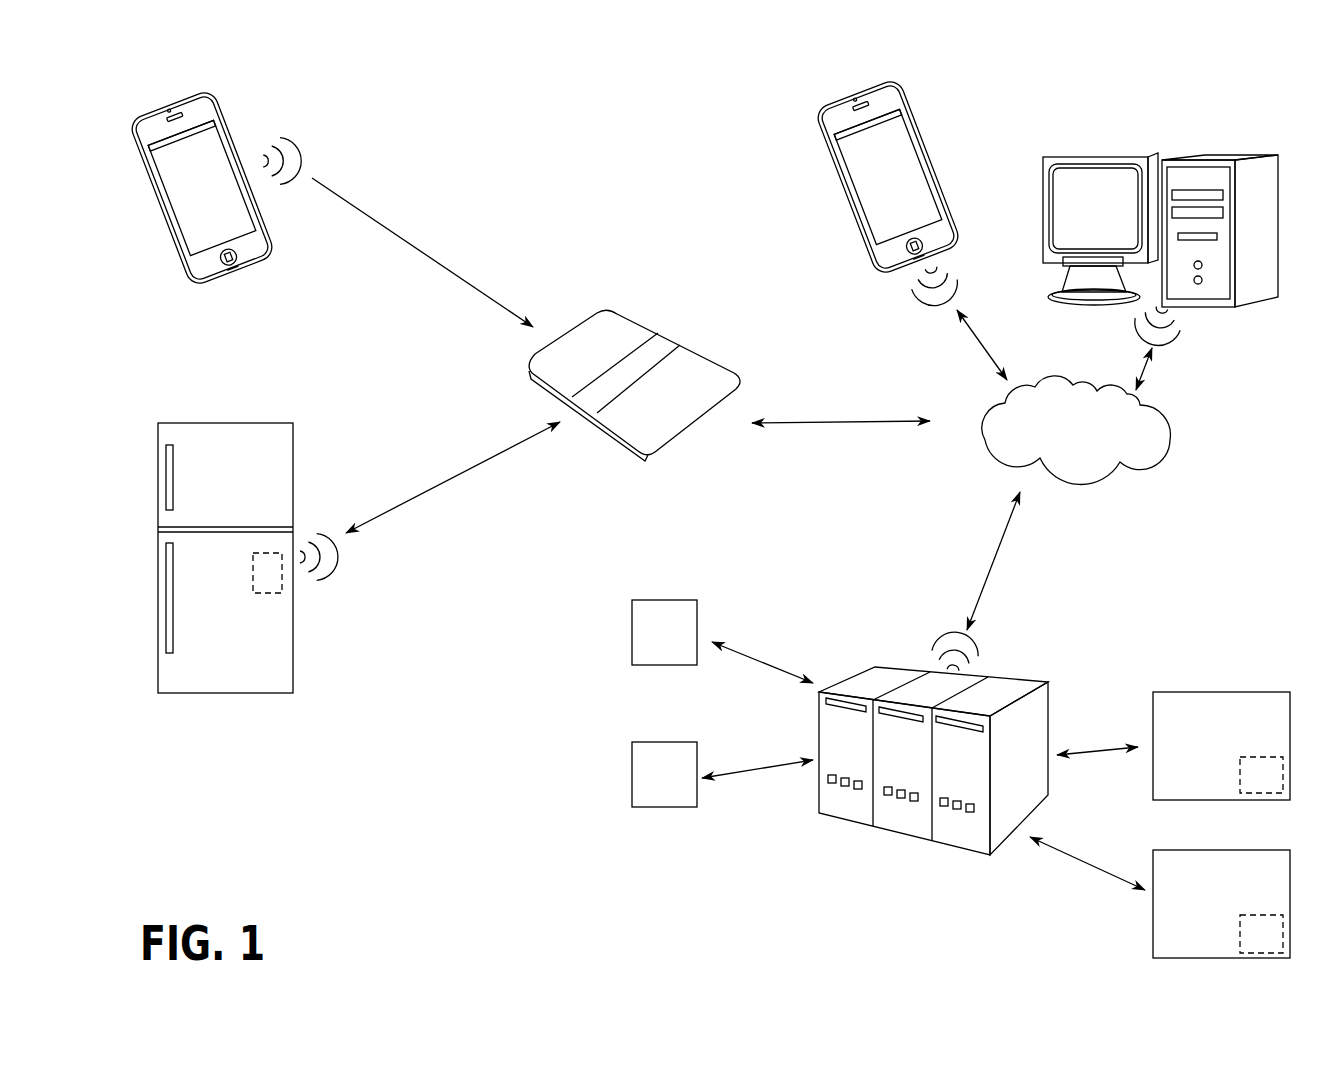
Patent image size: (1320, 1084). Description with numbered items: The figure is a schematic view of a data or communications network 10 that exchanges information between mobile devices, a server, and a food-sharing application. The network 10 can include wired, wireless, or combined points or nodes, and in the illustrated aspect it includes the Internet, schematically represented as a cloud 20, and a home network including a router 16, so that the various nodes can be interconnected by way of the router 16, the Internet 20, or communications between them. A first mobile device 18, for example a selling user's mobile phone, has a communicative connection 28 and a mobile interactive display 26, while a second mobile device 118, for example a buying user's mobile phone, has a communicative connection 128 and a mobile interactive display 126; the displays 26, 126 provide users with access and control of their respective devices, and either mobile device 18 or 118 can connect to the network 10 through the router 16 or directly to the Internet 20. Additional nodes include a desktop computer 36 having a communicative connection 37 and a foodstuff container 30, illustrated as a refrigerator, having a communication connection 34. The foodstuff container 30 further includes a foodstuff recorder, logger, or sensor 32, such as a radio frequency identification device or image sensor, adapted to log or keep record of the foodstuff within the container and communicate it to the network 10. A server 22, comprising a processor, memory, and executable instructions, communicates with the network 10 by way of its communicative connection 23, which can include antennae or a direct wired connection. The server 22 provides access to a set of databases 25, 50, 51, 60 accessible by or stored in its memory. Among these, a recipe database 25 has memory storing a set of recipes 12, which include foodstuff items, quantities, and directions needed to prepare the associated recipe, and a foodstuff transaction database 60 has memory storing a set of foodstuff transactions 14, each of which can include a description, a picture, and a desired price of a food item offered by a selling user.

The network 10 is at (615, 66).
The second mobile device 118 is at (174, 191).
The mobile interactive display 126 is at (200, 200).
The communicative connection 128 is at (310, 144).
The router 16 is at (636, 318).
The foodstuff container 30 is at (258, 596).
The sensor 32 is at (268, 593).
The communication connection 34 is at (350, 560).
The first mobile device 18 is at (865, 189).
The mobile interactive display 26 is at (880, 158).
The communicative connection 28 is at (918, 308).
The desktop computer 36 is at (1148, 140).
The communicative connection 37 is at (1193, 333).
The Internet 20 is at (1066, 430).
The server 22 is at (1050, 740).
The communicative connection 23 is at (922, 640).
The database 50 is at (664, 632).
The database 51 is at (664, 774).
The recipe database 25 is at (1199, 750).
The set of recipes 12 is at (1254, 788).
The foodstuff transaction database 60 is at (1201, 907).
The set of foodstuff transactions 14 is at (1254, 946).